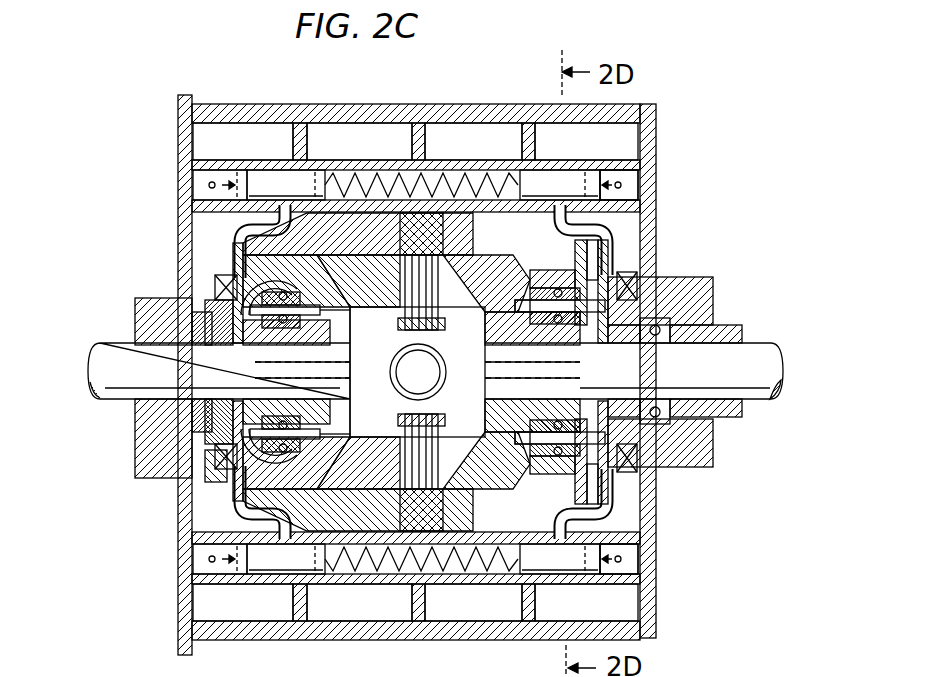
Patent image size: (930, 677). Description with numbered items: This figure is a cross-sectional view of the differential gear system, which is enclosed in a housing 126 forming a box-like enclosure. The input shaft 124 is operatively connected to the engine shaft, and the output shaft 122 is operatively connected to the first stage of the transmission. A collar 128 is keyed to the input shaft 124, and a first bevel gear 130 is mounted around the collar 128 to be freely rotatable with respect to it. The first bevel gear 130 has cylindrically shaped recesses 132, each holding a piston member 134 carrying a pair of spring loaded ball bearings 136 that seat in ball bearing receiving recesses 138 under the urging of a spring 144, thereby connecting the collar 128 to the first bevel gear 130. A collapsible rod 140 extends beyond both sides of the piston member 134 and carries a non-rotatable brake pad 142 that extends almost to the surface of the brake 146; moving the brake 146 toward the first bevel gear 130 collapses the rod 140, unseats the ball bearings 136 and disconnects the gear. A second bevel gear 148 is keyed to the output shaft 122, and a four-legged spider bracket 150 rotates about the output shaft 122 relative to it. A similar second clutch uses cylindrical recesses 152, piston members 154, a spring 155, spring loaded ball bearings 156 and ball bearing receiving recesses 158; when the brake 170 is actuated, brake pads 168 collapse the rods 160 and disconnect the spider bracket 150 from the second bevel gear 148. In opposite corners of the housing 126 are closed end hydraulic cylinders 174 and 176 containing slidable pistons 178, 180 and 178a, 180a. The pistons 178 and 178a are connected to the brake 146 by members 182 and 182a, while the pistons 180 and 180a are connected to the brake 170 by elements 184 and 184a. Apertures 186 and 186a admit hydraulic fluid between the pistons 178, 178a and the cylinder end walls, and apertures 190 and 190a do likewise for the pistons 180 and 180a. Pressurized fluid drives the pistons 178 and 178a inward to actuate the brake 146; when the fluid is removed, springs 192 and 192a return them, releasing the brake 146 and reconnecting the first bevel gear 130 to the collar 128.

The output shaft 122 is at (113, 344).
The input shaft 124 is at (756, 344).
The housing 126 is at (656, 110).
The collar 128 is at (500, 333).
The first bevel gear 130 is at (548, 296).
The cylindrically shaped recesses 132 is at (608, 280).
The piston member 134 is at (560, 340).
The spring loaded ball bearings 136 is at (558, 290).
The ball bearing receiving recesses 138 is at (526, 288).
The collapsible rod 140 is at (616, 340).
The brake pad 142 is at (634, 285).
The spring 144 is at (505, 281).
The brake 146 is at (612, 258).
The second bevel gear 148 is at (347, 328).
The four-legged spider bracket 150 is at (370, 238).
The cylindrical recesses 152 is at (236, 258).
The piston member 154 is at (300, 318).
The spring 155 is at (326, 270).
The spring loaded ball bearings 156 is at (230, 262).
The ball bearing receiving recesses 158 is at (265, 268).
The rods 160 is at (322, 312).
The brake pads 168 is at (201, 404).
The brake 170 is at (238, 472).
The hydraulic cylinder 174 is at (656, 170).
The hydraulic cylinder 176 is at (656, 561).
The piston 178 is at (575, 193).
The piston 178a is at (580, 568).
The piston 180 is at (305, 193).
The piston 180a is at (315, 568).
The member 182 is at (620, 222).
The member 182a is at (618, 519).
The element 184 is at (238, 226).
The element 184a is at (240, 518).
The aperture 186 is at (618, 181).
The aperture 186a is at (626, 561).
The aperture 190 is at (206, 184).
The aperture 190a is at (206, 563).
The spring 192 is at (358, 172).
The spring 192a is at (372, 575).